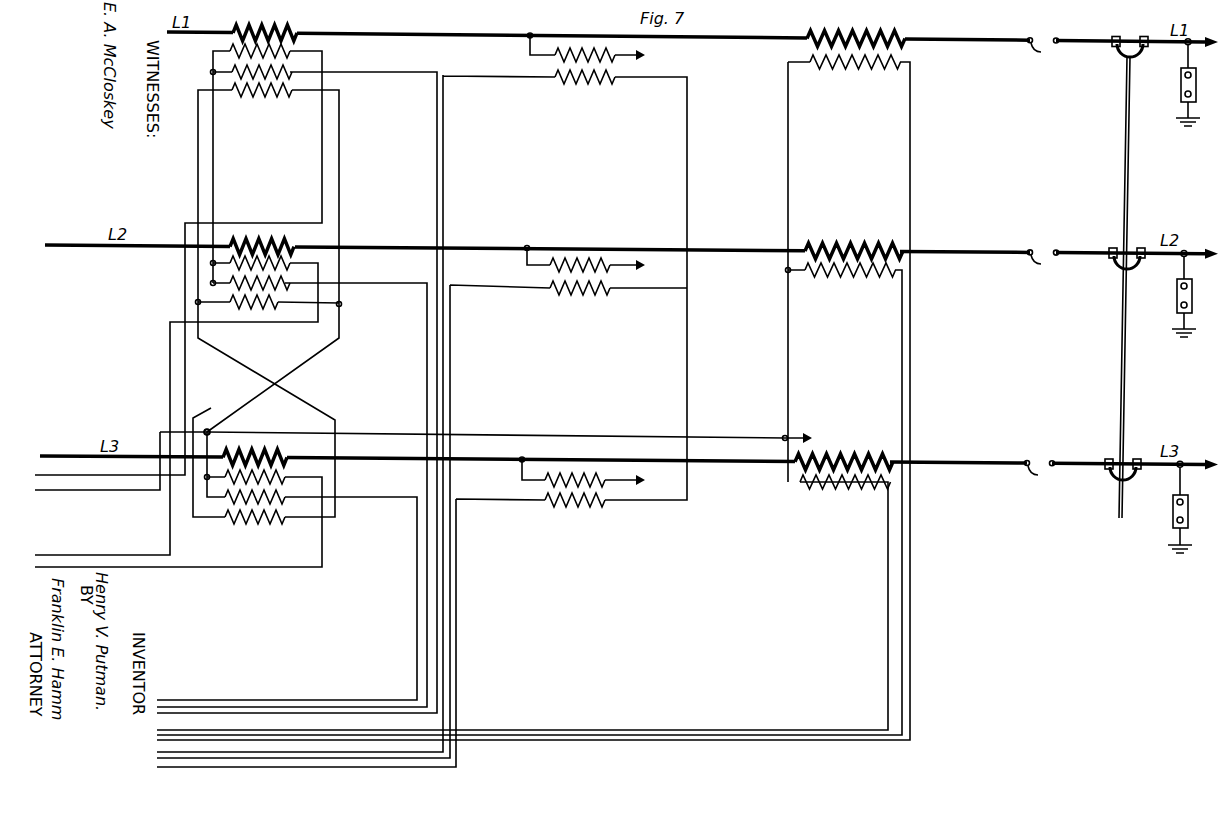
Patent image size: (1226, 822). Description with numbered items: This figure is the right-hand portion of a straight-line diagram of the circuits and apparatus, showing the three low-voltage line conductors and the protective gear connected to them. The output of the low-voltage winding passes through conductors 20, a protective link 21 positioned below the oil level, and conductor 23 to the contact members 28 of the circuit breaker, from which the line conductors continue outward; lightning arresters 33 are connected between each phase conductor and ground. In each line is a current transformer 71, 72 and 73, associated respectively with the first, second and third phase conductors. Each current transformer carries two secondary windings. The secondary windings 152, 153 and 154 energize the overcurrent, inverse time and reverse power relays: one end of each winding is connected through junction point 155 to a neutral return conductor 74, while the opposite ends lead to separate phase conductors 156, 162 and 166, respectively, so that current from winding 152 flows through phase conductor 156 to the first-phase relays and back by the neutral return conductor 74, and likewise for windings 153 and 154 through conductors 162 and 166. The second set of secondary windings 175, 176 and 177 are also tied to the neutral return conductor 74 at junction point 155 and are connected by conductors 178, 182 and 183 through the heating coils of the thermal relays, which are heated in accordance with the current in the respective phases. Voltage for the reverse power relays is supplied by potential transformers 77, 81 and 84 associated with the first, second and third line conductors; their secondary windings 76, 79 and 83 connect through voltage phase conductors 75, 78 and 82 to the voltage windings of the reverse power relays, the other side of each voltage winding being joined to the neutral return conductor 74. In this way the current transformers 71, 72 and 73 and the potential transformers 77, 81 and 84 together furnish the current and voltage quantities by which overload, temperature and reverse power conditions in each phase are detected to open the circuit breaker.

The current transformer 71 is at (276, 16).
The current transformer 72 is at (272, 214).
The current transformer 73 is at (287, 433).
The secondary winding 152 is at (294, 52).
The secondary winding 153 is at (292, 263).
The secondary winding 154 is at (281, 476).
The secondary winding 175 is at (293, 72).
The secondary winding 176 is at (287, 283).
The secondary winding 177 is at (278, 496).
The junction point 155 is at (210, 431).
The phase conductor 156 is at (322, 147).
The conductor 162 is at (252, 322).
The conductor 166 is at (285, 568).
The neutral return conductor 74 is at (103, 491).
The conductor 178 is at (437, 147).
The conductor 182 is at (427, 338).
The conductor 183 is at (417, 614).
The voltage phase conductor 75 is at (465, 76).
The voltage phase conductor 78 is at (472, 287).
The voltage phase winding 82 is at (480, 499).
The potential transformer 77 is at (519, 70).
The secondary winding 76 is at (575, 82).
The transformer 81 is at (507, 277).
The secondary winding 79 is at (575, 292).
The potential transformer 84 is at (502, 492).
The secondary winding 83 is at (587, 507).
The conductor 20 is at (973, 42).
The protective link 21 is at (1044, 266).
The conductor 23 is at (1104, 40).
The contact member 28 is at (1120, 48).
The lightning arrester 33 is at (1181, 88).